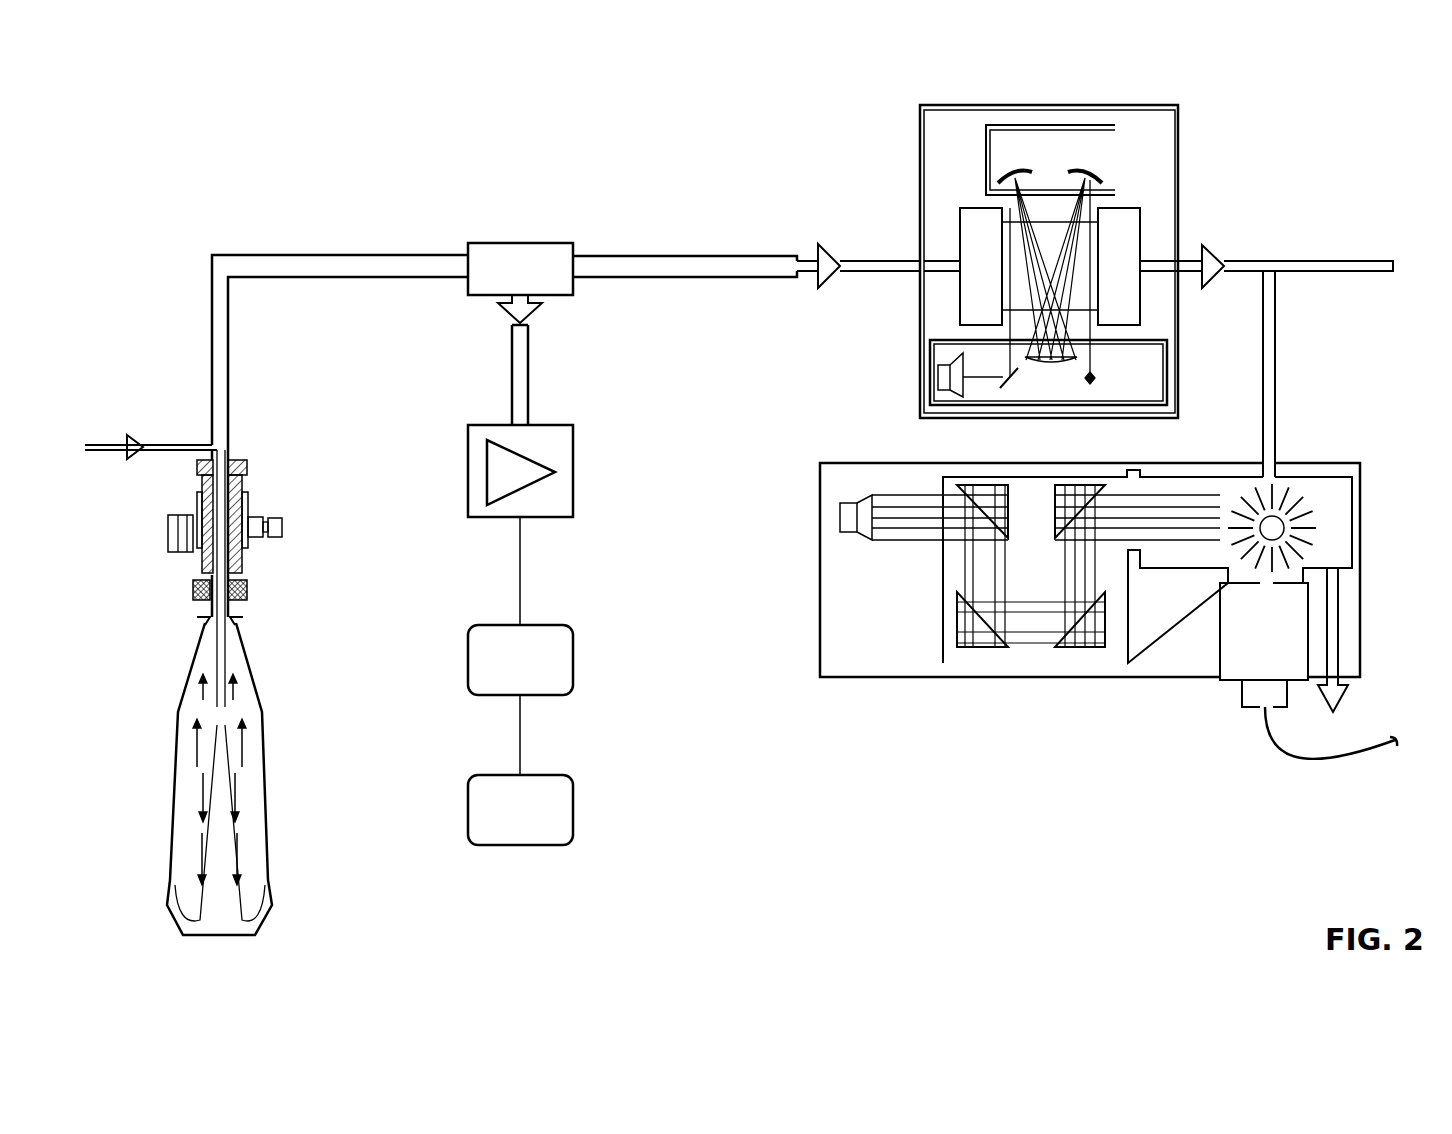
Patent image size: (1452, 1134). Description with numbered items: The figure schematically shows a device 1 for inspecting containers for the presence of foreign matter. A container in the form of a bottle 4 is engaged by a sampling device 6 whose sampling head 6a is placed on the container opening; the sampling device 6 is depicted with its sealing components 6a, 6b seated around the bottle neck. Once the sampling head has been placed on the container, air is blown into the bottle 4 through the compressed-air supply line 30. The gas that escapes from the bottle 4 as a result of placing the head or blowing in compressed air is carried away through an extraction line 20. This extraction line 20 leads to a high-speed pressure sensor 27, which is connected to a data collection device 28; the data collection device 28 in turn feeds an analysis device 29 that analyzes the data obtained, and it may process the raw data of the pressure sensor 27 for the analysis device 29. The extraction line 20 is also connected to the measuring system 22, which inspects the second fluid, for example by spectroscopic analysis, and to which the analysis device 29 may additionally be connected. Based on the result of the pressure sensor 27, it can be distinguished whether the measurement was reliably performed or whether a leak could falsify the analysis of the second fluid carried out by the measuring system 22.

The device 1 is at (1093, 798).
The container 4 is at (262, 760).
The sampling device 6 is at (250, 604).
The sampling head 6a is at (187, 611).
The seal 6b is at (193, 619).
The extraction line 20 is at (229, 372).
The measuring system 22 is at (1405, 355).
The high-speed pressure sensor 27 is at (573, 470).
The data collection device 28 is at (573, 668).
The analysis device 29 is at (573, 820).
The compressed-air supply line 30 is at (94, 450).